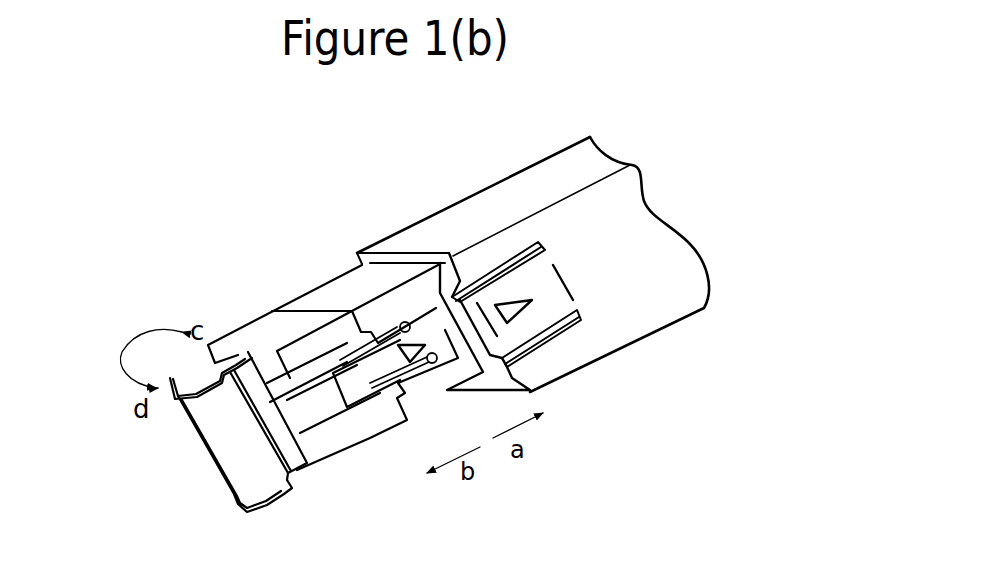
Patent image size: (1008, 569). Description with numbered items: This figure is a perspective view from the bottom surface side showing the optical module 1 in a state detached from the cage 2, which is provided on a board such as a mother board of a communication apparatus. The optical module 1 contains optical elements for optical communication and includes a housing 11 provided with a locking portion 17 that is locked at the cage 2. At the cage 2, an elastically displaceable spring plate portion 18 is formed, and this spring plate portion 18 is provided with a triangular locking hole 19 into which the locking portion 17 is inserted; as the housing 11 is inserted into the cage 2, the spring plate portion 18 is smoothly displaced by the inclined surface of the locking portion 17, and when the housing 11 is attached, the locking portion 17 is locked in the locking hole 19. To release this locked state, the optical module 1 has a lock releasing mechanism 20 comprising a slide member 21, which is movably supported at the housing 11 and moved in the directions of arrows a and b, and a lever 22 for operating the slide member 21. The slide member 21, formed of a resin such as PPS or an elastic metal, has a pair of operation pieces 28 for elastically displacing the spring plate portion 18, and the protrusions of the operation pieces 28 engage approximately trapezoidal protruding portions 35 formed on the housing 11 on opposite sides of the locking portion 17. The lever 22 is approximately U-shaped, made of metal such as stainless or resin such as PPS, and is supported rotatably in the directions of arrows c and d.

The optical module 1 is at (371, 329).
The cage 2 is at (490, 202).
The housing 11 is at (317, 325).
The locking portion 17 is at (423, 343).
The spring plate portion 18 is at (547, 312).
The locking hole 19 is at (530, 301).
The lock releasing mechanism 20 is at (378, 300).
The slide member 21 is at (409, 247).
The lever 22 is at (213, 457).
The operation pieces 28 is at (393, 393).
The protruding portions 35 is at (440, 365).